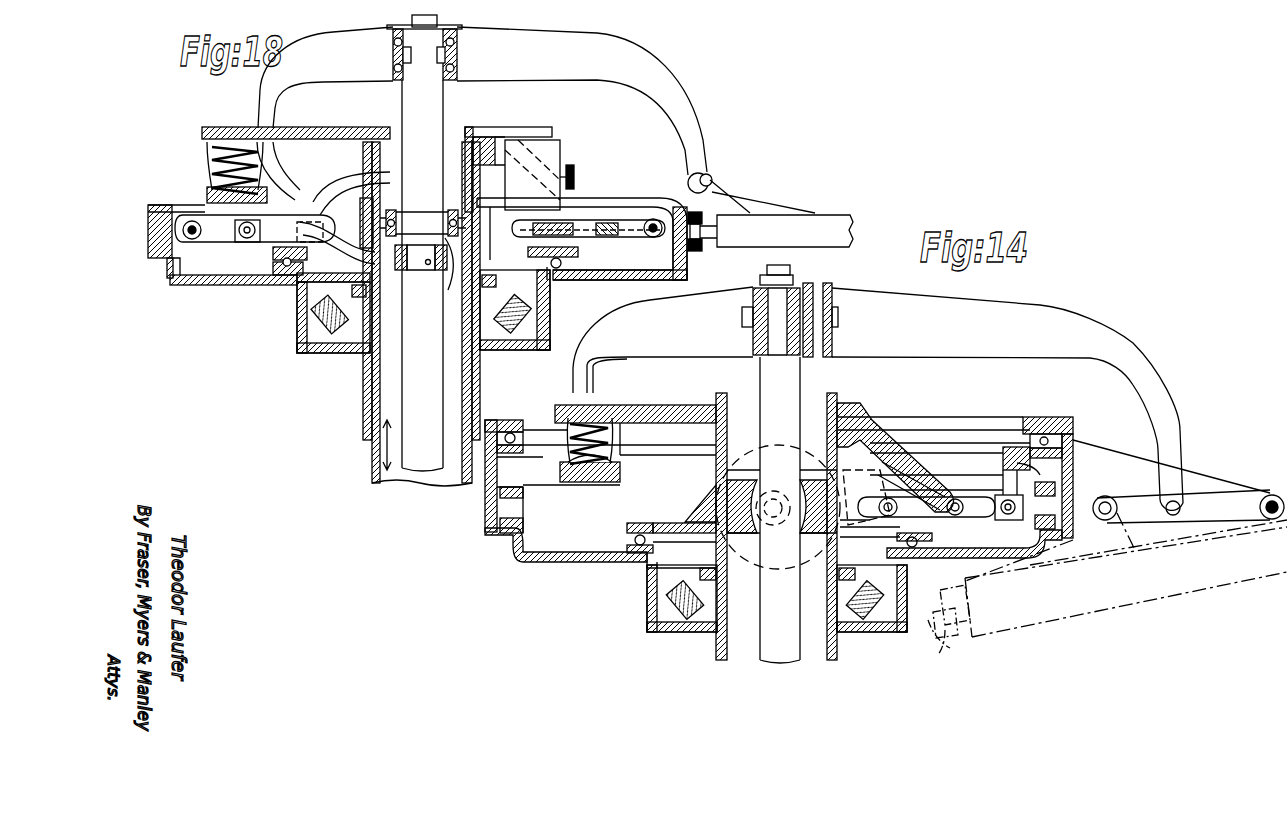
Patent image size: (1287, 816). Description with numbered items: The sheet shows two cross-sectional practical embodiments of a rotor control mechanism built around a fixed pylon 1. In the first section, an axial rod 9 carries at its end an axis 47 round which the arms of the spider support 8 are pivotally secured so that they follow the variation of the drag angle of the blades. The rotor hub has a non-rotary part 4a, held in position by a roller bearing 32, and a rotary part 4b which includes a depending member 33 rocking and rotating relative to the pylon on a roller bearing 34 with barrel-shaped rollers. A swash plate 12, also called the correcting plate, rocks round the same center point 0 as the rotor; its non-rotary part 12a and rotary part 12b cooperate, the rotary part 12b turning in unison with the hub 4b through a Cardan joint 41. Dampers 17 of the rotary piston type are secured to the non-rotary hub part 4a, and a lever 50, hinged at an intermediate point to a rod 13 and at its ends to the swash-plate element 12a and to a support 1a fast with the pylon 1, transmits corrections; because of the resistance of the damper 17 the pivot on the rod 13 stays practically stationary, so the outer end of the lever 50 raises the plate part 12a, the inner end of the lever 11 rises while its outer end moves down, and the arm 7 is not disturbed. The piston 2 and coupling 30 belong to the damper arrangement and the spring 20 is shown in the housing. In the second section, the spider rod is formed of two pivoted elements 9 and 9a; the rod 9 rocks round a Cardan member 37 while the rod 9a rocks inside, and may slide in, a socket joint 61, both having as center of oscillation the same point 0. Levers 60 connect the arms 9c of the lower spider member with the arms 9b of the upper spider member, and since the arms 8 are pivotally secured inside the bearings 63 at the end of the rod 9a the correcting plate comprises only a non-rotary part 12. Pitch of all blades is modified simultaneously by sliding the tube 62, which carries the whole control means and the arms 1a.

In FIG. 18, the pylon 1 is at (480, 390).
In FIG. 14, the pylon 1 is at (720, 648).
In FIG. 18, the support 1a is at (486, 147).
In FIG. 14, the support 1a is at (848, 426).
In FIG. 18, the piston 2 is at (756, 215).
In FIG. 14, the piston 2 is at (1115, 590).
In FIG. 18, the non-rotary part of the rotor hub 4a is at (562, 240).
In FIG. 14, the non-rotary part of the rotor hub 4a is at (886, 528).
In FIG. 18, the rotary part of the hub 4b is at (224, 242).
In FIG. 14, the rotary part of the hub 4b is at (935, 640).
In FIG. 18, the arm 7 is at (728, 195).
In FIG. 14, the arm 7 is at (1120, 543).
In FIG. 18, the arms of the spider support 8 is at (617, 63).
In FIG. 14, the arms of the spider support 8 is at (1015, 317).
In FIG. 18, the axial rod 9 is at (415, 376).
In FIG. 14, the axial rod 9 is at (785, 646).
In FIG. 18, the rod of the spider support 9a is at (402, 104).
In FIG. 18, the arms of the upper spider member 9b is at (337, 188).
In FIG. 18, the arms of the lower spider member 9c is at (346, 256).
In FIG. 14, the lever 11 is at (1200, 495).
In FIG. 18, the swash plate 12 is at (620, 200).
In FIG. 14, the swash plate 12 is at (633, 415).
In FIG. 14, the non-rotary part of the correcting plate 12a is at (952, 445).
In FIG. 14, the rotary part of the swash plate 12b is at (1095, 458).
In FIG. 14, the rod 13 is at (857, 498).
In FIG. 18, the damper 17 is at (555, 152).
In FIG. 14, the damper 17 is at (812, 572).
In FIG. 18, the spring 20 is at (215, 154).
In FIG. 14, the spring 20 is at (566, 432).
In FIG. 18, the coupling 30 is at (699, 247).
In FIG. 14, the coupling 30 is at (960, 630).
In FIG. 18, the roller bearing 32 is at (563, 272).
In FIG. 14, the roller bearing 32 is at (925, 540).
In FIG. 18, the depending member 33 is at (548, 322).
In FIG. 14, the depending member 33 is at (648, 623).
In FIG. 18, the roller bearing 34 is at (524, 334).
In FIG. 14, the roller bearing 34 is at (665, 604).
In FIG. 18, the Cardan member 37 is at (444, 292).
In FIG. 14, the Cardan joint 41 is at (1050, 488).
In FIG. 14, the axis 47 is at (818, 292).
In FIG. 18, the lever 50 is at (650, 237).
In FIG. 14, the lever 50 is at (988, 512).
In FIG. 18, the lever 60 is at (195, 242).
In FIG. 18, the socket joint 61 is at (432, 205).
In FIG. 18, the tube 62 is at (377, 452).
In FIG. 18, the bearing 63 is at (462, 34).
In FIG. 18, the point O 0 is at (420, 250).